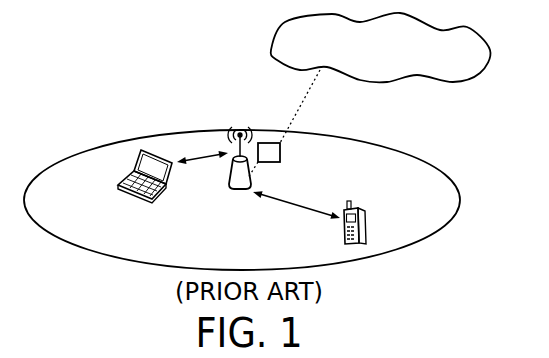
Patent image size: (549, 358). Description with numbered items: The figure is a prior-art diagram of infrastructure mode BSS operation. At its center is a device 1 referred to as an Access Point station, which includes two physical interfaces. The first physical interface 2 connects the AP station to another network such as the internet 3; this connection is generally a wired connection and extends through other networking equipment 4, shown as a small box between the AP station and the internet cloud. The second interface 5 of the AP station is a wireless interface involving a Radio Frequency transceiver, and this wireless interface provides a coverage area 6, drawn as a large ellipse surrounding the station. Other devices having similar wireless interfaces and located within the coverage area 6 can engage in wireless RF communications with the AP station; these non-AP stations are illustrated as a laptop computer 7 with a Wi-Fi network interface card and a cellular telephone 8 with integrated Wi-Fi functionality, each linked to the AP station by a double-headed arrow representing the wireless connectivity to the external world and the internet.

The Access Point station 1 is at (239, 190).
The first physical interface 2 is at (250, 178).
The internet 3 is at (368, 70).
The other networking equipment 4 is at (280, 153).
The second interface 5 is at (232, 166).
The coverage area 6 is at (120, 259).
The laptop computer 7 is at (156, 201).
The cellular telephone 8 is at (367, 218).